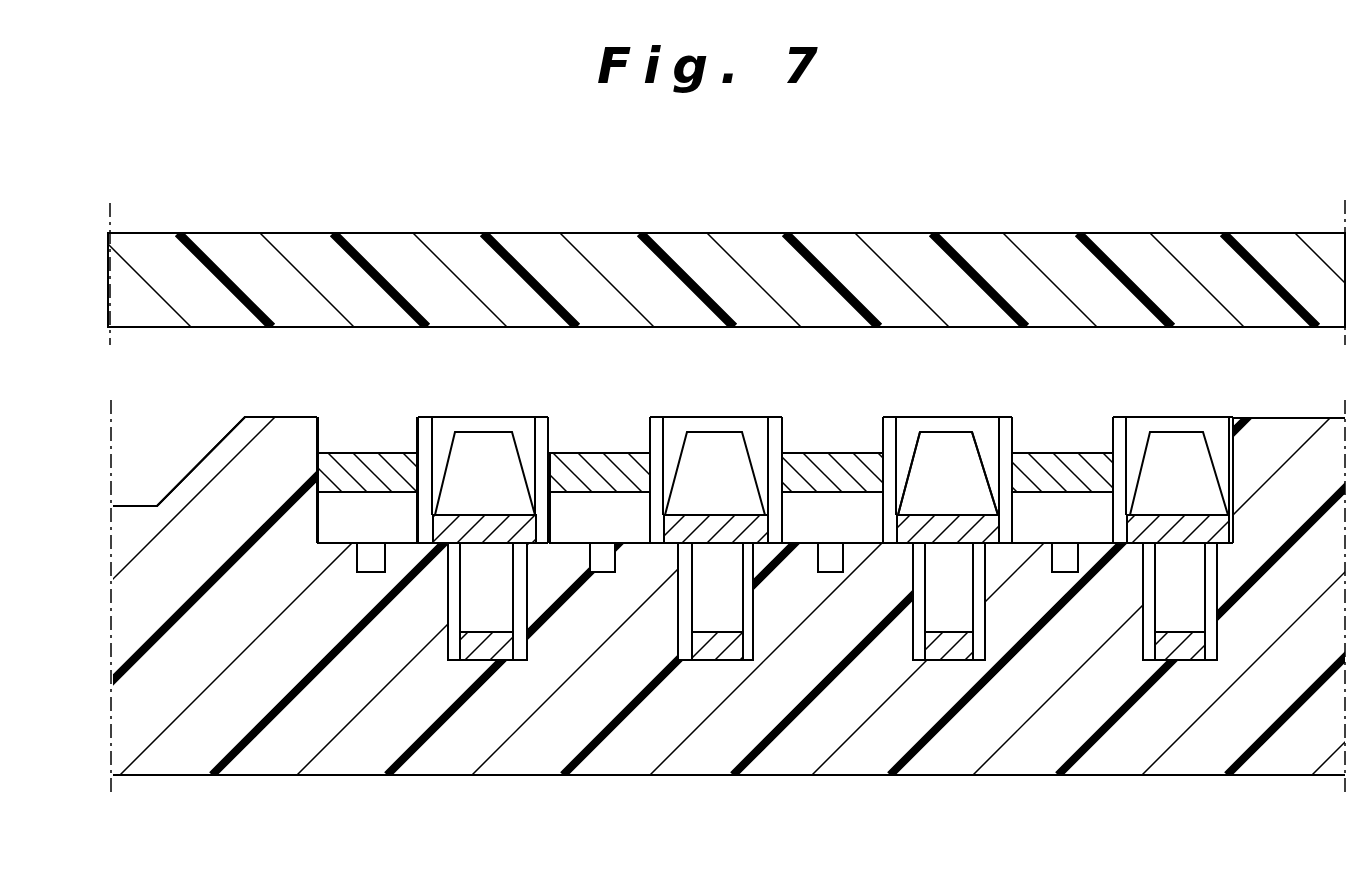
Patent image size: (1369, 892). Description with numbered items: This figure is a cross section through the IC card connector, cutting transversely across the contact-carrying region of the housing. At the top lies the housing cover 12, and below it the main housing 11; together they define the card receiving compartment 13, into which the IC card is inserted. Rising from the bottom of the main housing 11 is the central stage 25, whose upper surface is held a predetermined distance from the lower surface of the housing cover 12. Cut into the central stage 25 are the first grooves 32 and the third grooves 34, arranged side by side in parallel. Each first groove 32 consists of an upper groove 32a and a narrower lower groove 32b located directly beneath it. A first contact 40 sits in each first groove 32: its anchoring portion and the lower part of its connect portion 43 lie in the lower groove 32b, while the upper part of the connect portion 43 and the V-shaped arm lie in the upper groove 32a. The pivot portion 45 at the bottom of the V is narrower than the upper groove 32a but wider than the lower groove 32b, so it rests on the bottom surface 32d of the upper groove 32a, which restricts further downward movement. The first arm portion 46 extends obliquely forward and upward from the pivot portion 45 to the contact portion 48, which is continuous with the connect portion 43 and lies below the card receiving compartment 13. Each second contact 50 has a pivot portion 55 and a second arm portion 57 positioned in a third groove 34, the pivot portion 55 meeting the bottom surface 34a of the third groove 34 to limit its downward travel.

The main housing 11 is at (1020, 777).
The housing cover 12 is at (1027, 233).
The card receiving compartment 13 is at (498, 376).
The central stage 25 is at (270, 417).
The first groove 32 is at (1030, 387).
The upper groove 32a is at (998, 432).
The lower groove 32b is at (923, 570).
The bottom surface of the upper groove 32d is at (995, 527).
The third groove 34 is at (322, 425).
The bottom surface of the third groove 34a is at (395, 540).
The first contact 40 is at (1158, 420).
The connect portion 43 is at (1195, 610).
The pivot portion 45 is at (1183, 548).
The first arm portion 46 is at (1205, 455).
The contact portion 48 is at (1187, 433).
The second contact 50 is at (588, 446).
The pivot portion 55 is at (608, 512).
The second arm portion 57 is at (575, 512).